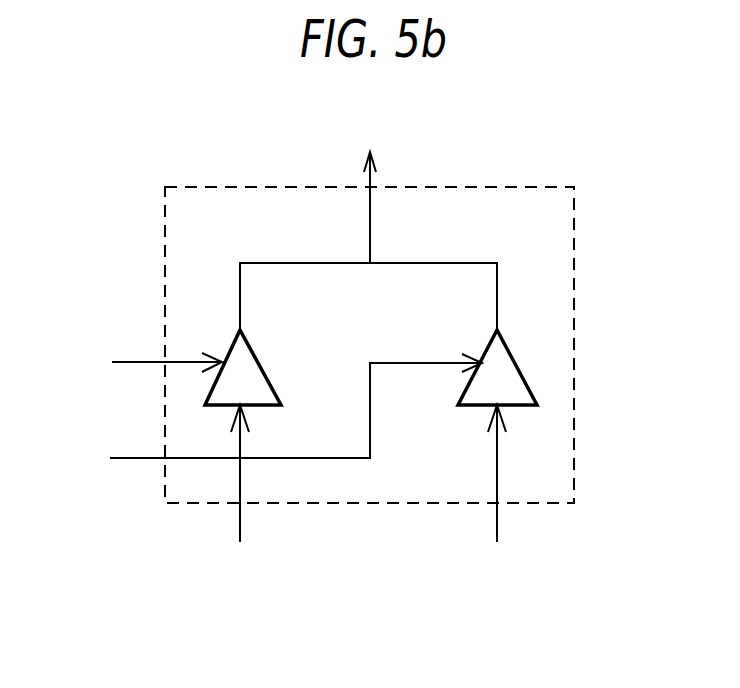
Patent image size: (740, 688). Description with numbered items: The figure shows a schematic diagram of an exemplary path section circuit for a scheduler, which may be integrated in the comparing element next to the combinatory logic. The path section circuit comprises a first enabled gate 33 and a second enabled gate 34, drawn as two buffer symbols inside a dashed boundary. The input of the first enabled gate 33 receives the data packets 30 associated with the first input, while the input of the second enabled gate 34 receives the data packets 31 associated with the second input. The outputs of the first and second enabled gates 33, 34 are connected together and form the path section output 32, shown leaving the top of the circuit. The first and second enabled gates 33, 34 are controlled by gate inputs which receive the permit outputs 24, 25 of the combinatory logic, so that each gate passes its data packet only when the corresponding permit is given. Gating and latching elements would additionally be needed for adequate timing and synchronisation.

The permit output 24 is at (128, 362).
The permit output 25 is at (135, 458).
The data packet 30 is at (240, 520).
The data packet 31 is at (497, 522).
The path section output 32 is at (374, 165).
The first enabled gate 33 is at (228, 348).
The second enabled gate 34 is at (518, 365).